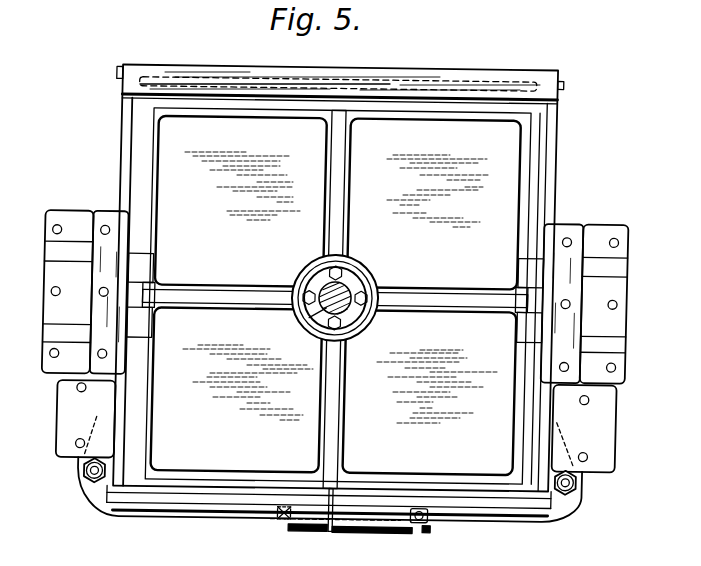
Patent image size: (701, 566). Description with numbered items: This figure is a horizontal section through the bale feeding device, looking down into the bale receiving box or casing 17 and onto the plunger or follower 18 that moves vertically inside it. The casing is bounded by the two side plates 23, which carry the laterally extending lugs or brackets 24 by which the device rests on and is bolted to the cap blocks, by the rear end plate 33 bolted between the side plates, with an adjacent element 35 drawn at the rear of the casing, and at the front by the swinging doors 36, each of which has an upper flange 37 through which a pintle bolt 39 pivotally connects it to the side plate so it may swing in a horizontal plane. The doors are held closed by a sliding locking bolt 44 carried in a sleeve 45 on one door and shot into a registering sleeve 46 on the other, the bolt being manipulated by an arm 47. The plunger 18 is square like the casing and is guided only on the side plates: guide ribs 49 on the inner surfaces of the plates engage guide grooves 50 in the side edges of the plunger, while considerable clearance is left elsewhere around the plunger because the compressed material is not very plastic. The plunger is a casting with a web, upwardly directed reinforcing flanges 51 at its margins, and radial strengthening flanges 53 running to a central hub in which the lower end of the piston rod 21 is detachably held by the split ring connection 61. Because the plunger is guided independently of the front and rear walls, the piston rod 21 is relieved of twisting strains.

The bale receiving box or casing 17 is at (347, 277).
The plunger or follower 18 is at (434, 204).
The piston rod 21 is at (345, 292).
The side plates 23 is at (553, 138).
The lugs or brackets 24 is at (612, 322).
The rear end plate 33 is at (440, 98).
The top strip 35 is at (512, 82).
The swinging doors 36 is at (505, 506).
The upper flange 37 is at (148, 516).
The pintle bolts 39 is at (582, 497).
The sliding locking bolt 44 is at (276, 520).
The sleeve 45 is at (393, 533).
The registering sleeve 46 is at (297, 528).
The arm 47 is at (432, 533).
The guide ribs 49 is at (142, 282).
The guide grooves 50 is at (146, 303).
The reinforcing flanges 51 is at (152, 197).
The radial strengthening flanges 53 is at (244, 291).
The split ring connection 61 is at (372, 310).